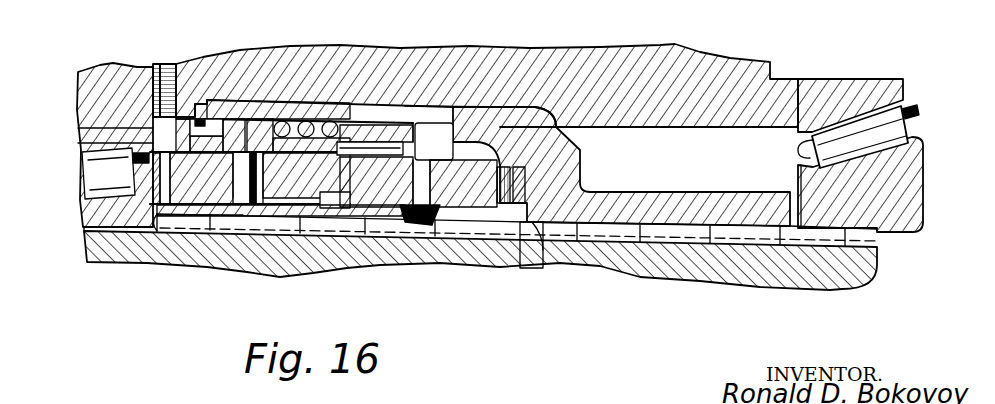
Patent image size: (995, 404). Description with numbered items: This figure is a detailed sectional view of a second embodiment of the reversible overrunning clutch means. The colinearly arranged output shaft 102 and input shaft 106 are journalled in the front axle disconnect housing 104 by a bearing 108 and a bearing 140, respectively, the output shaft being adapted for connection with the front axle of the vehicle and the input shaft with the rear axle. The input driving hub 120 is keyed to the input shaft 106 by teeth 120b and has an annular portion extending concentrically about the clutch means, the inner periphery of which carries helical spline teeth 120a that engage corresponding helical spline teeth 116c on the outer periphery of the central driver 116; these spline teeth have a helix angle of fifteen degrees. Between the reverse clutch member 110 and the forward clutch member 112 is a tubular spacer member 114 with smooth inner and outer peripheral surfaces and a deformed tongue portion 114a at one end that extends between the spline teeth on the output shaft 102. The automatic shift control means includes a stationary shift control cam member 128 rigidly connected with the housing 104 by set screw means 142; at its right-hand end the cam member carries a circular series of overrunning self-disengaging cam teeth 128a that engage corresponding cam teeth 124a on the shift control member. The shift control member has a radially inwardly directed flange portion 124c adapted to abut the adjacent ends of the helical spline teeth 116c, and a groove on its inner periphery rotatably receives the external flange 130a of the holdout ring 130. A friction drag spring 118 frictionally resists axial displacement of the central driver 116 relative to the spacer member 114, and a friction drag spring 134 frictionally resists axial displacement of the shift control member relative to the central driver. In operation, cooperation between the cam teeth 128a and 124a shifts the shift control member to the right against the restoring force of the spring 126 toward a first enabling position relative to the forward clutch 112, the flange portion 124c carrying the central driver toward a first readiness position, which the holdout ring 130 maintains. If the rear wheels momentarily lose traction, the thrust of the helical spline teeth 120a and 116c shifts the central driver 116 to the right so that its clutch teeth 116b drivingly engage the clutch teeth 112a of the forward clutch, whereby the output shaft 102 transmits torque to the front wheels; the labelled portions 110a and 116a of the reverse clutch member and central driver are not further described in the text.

The output shaft 102 is at (97, 242).
The front axle disconnect housing 104 is at (653, 110).
The input shaft 106 is at (750, 273).
The bearing 108 is at (115, 184).
The reverse clutch member 110 is at (180, 212).
The rod portion 110a is at (237, 214).
The forward clutch member 112 is at (497, 212).
The clutch teeth 112a is at (426, 189).
The spacer member 114 is at (345, 235).
The deformed tongue portion 114a is at (405, 228).
The central driver 116 is at (262, 216).
The sleeve end 116a is at (257, 214).
The clutch teeth 116b is at (410, 188).
The helical spline teeth 116c is at (380, 122).
The friction drag spring 118 is at (335, 208).
The input driving hub 120 is at (577, 171).
The helical spline teeth 120a is at (421, 106).
The teeth 120b is at (533, 246).
The cam teeth 124a is at (212, 118).
The flange portion 124c is at (291, 178).
The spring 126 is at (280, 120).
The shift control cam member 128 is at (153, 107).
The cam teeth 128a is at (250, 183).
The holdout ring 130 is at (193, 178).
The external flange 130a is at (248, 120).
The friction drag spring 134 is at (343, 122).
The bearing 140 is at (857, 155).
The set screw means 142 is at (164, 64).